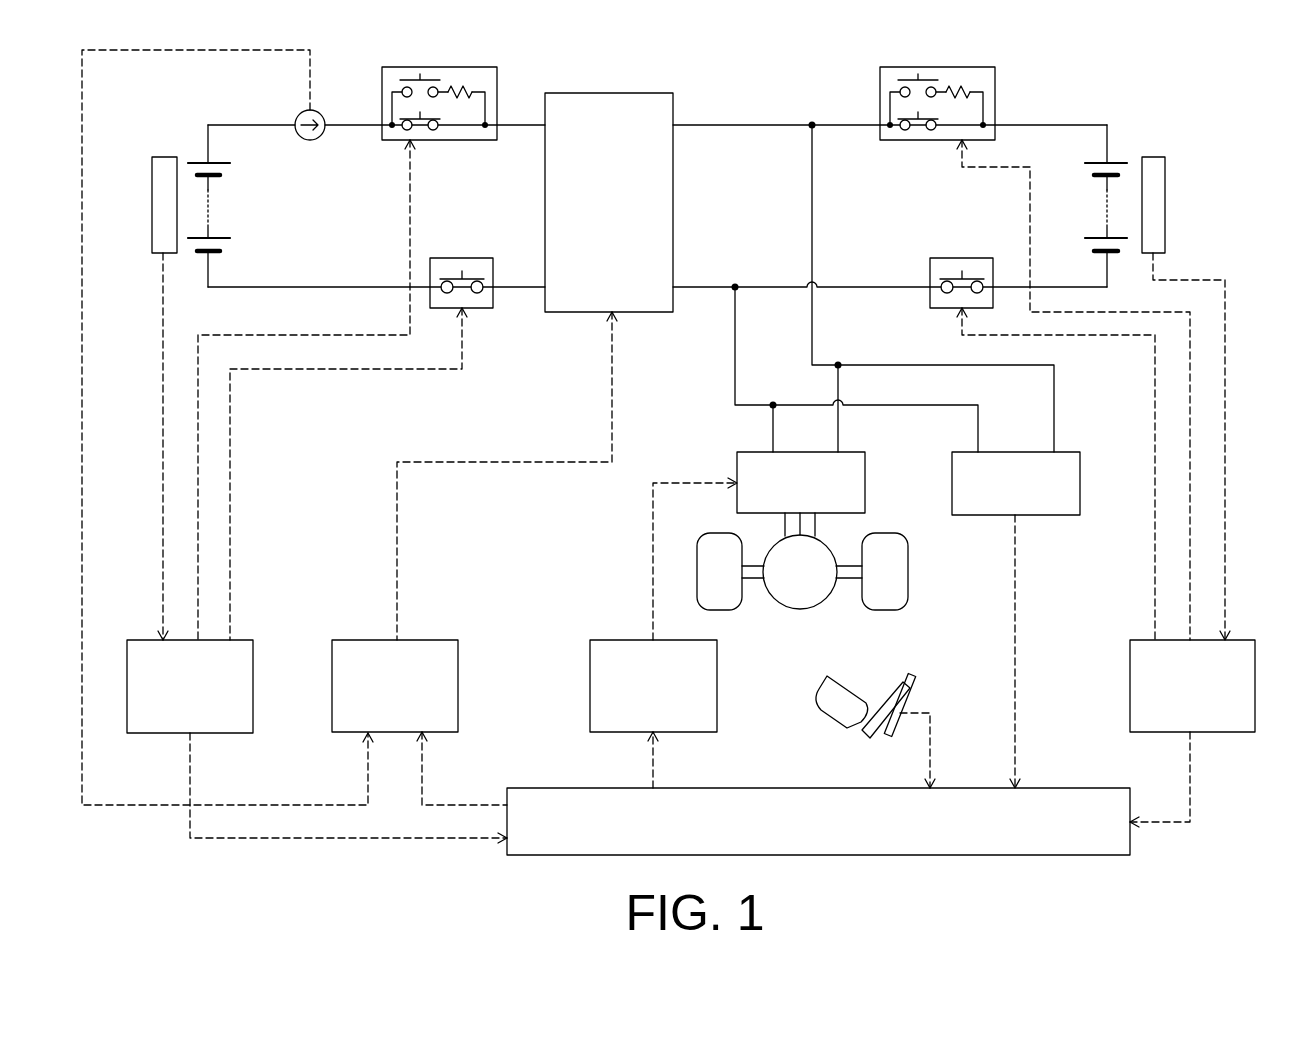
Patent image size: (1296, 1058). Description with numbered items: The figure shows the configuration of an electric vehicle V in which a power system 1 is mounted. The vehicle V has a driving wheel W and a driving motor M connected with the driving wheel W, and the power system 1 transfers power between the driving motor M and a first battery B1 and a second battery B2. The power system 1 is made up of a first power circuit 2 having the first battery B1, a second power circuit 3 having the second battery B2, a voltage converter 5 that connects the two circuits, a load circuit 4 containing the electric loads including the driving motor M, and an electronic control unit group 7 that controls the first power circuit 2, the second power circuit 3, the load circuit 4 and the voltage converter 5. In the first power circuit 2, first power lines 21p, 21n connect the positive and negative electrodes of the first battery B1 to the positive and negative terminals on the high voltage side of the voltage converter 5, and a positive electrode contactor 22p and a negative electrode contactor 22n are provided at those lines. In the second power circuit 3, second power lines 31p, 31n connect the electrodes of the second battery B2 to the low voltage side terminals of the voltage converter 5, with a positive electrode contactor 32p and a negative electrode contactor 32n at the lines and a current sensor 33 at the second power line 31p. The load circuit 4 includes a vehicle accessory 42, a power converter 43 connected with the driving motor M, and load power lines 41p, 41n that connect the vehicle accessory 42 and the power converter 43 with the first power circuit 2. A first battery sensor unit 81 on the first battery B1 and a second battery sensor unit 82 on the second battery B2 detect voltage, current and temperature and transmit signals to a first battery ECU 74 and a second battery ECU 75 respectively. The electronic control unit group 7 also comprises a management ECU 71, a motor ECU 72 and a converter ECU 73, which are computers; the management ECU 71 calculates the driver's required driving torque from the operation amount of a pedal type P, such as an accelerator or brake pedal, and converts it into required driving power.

The power system 1 is at (1258, 220).
The first power circuit 2 is at (1120, 90).
The second power circuit 3 is at (138, 105).
The load circuit 4 is at (702, 384).
The voltage converter 5 is at (650, 93).
The electronic control unit group 7 is at (1260, 567).
The first power line 21p is at (718, 124).
The first power line 21n is at (705, 286).
The positive electrode contactor 22p is at (996, 81).
The negative electrode contactor 22n is at (947, 257).
The second power line 31p is at (252, 124).
The second power line 31n is at (254, 286).
The positive electrode contactor 32p is at (497, 72).
The negative electrode contactor 32n is at (470, 257).
The current sensor 33 is at (319, 110).
The load power line 41p is at (905, 364).
The load power line 41n is at (903, 406).
The vehicle accessory 42 is at (1073, 452).
The power converter 43 is at (739, 452).
The management ECU 71 is at (963, 788).
The motor ECU 72 is at (605, 640).
The converter ECU 73 is at (435, 640).
The first battery ECU 74 is at (1232, 640).
The second battery ECU 75 is at (243, 640).
The first battery sensor unit 81 is at (1160, 156).
The second battery sensor unit 82 is at (176, 156).
The first battery B1 is at (1120, 163).
The second battery B2 is at (228, 177).
The driving motor M is at (812, 609).
The driving wheel W is at (889, 533).
The pedal type P is at (915, 674).
The electric vehicle V is at (1222, 88).